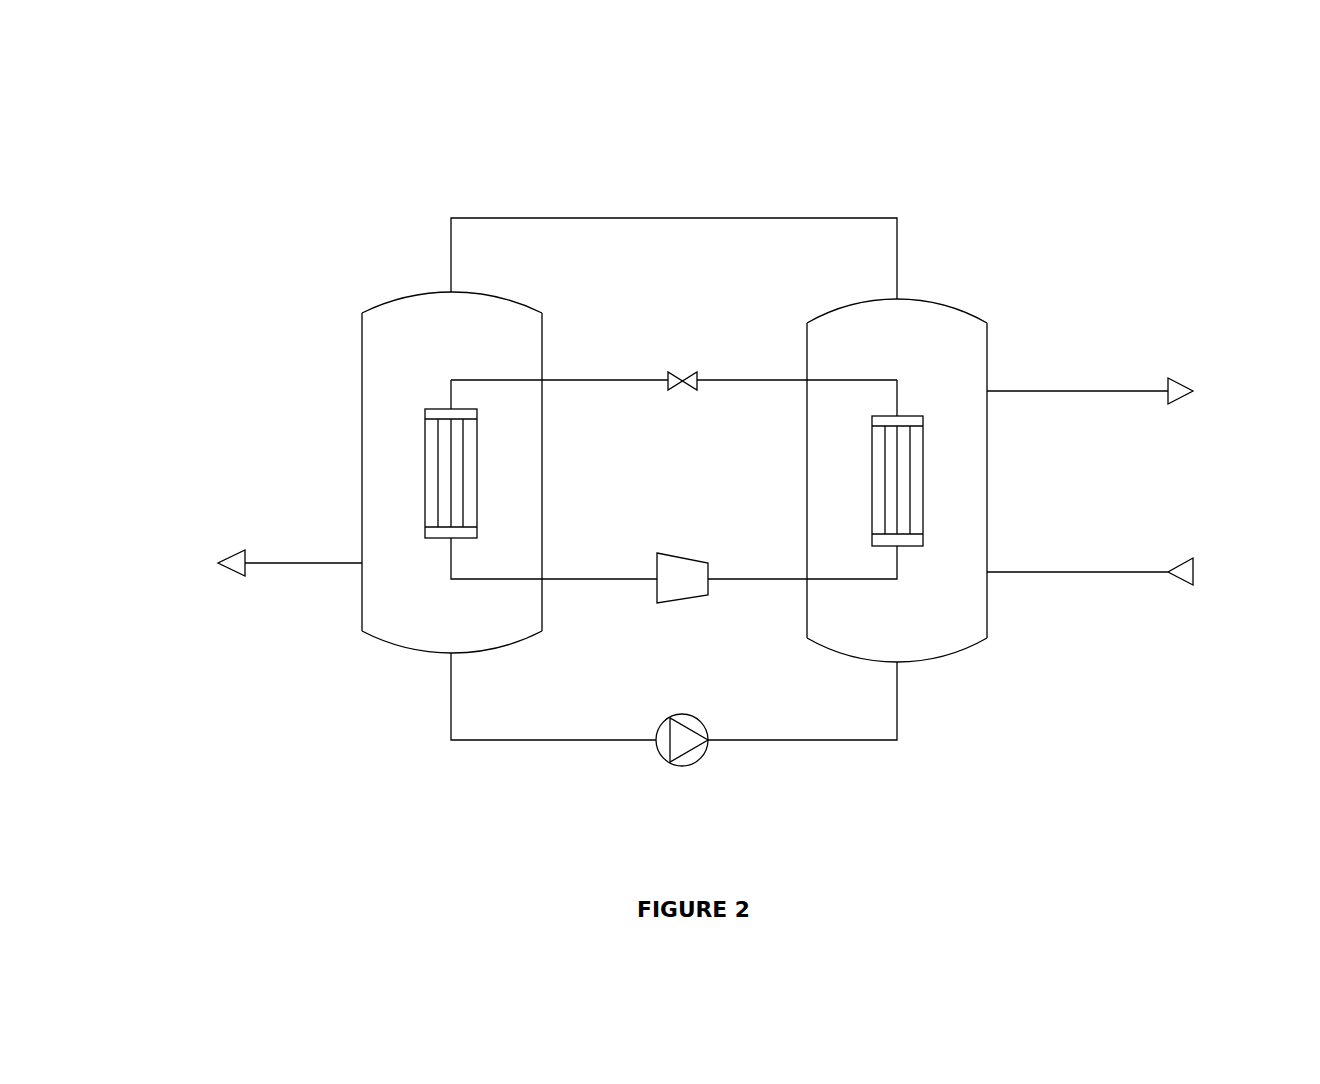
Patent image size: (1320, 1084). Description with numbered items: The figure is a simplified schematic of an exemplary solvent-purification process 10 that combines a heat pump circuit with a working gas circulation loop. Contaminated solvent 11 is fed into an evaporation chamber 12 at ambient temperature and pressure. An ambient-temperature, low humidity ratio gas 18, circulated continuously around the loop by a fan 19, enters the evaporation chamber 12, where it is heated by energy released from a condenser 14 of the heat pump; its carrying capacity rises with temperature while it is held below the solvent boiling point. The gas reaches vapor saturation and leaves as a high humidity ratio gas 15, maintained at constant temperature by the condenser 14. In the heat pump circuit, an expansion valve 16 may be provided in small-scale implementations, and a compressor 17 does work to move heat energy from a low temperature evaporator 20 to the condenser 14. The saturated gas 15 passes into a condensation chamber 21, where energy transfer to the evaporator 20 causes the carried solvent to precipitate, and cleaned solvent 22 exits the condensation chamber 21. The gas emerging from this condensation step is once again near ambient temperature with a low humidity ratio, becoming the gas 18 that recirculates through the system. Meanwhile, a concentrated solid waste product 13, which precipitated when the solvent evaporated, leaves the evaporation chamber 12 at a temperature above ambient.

The process 10 is at (1007, 162).
The contaminated solvent 11 is at (1082, 575).
The evaporation chamber 12 is at (990, 478).
The concentrated solid waste product 13 is at (1104, 390).
The condenser 14 is at (922, 480).
The high humidity ratio gas 15 is at (695, 217).
The expansion valve 16 is at (681, 366).
The compressor 17 is at (683, 601).
The low humidity ratio gas 18 is at (722, 742).
The fan 19 is at (681, 766).
The evaporator 20 is at (425, 478).
The condensation chamber 21 is at (360, 472).
The cleaned solvent 22 is at (283, 567).